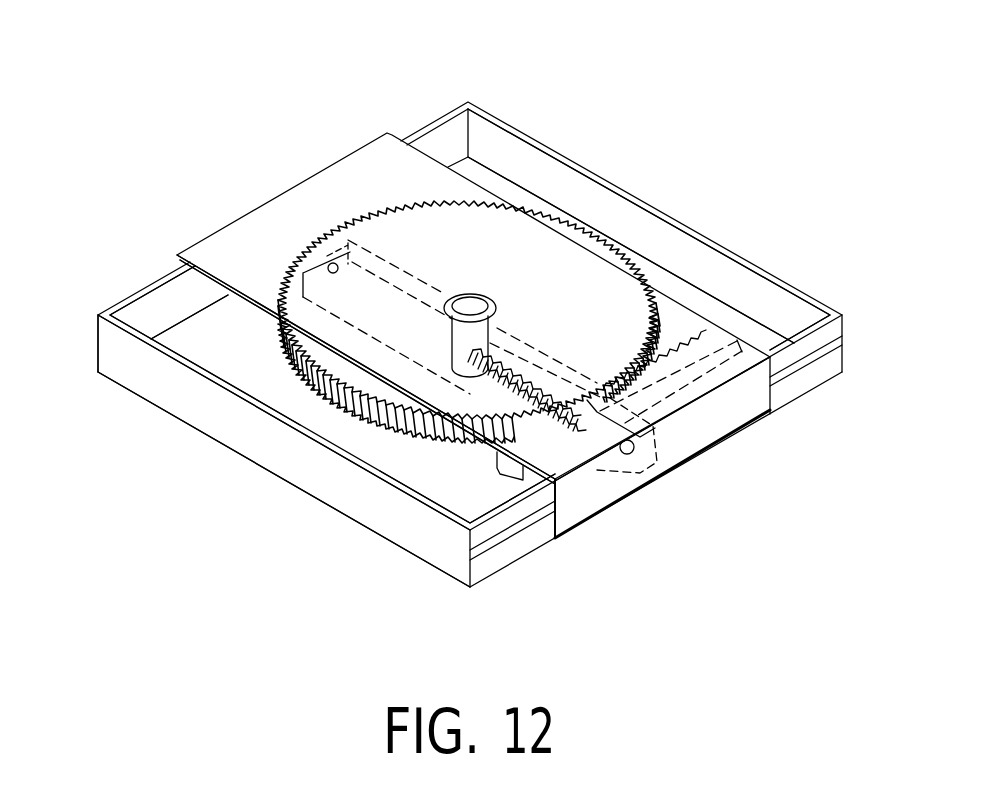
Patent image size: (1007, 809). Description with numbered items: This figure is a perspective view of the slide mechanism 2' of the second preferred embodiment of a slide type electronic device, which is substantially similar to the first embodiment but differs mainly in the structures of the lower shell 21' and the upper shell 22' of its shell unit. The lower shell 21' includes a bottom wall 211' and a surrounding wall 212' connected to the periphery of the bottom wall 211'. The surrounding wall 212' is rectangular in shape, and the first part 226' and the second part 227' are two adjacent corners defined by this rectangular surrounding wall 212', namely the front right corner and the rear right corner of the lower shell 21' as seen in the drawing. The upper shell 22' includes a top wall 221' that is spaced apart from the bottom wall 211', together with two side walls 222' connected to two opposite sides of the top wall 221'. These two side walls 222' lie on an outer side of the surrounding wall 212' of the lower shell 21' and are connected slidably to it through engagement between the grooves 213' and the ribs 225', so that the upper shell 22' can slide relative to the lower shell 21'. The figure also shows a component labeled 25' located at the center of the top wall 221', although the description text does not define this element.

The slide mechanism 2' is at (460, 353).
The lower shell 21' is at (460, 383).
The upper shell 22' is at (448, 318).
The hub / pivot 25' is at (528, 327).
The bottom wall 211' is at (176, 334).
The surrounding wall 212' is at (270, 451).
The grooves 213' is at (662, 458).
The top wall 221' is at (469, 256).
The side walls 222' is at (381, 382).
The ribs 225' is at (656, 500).
The first part 226' is at (426, 533).
The second part 227' is at (667, 229).